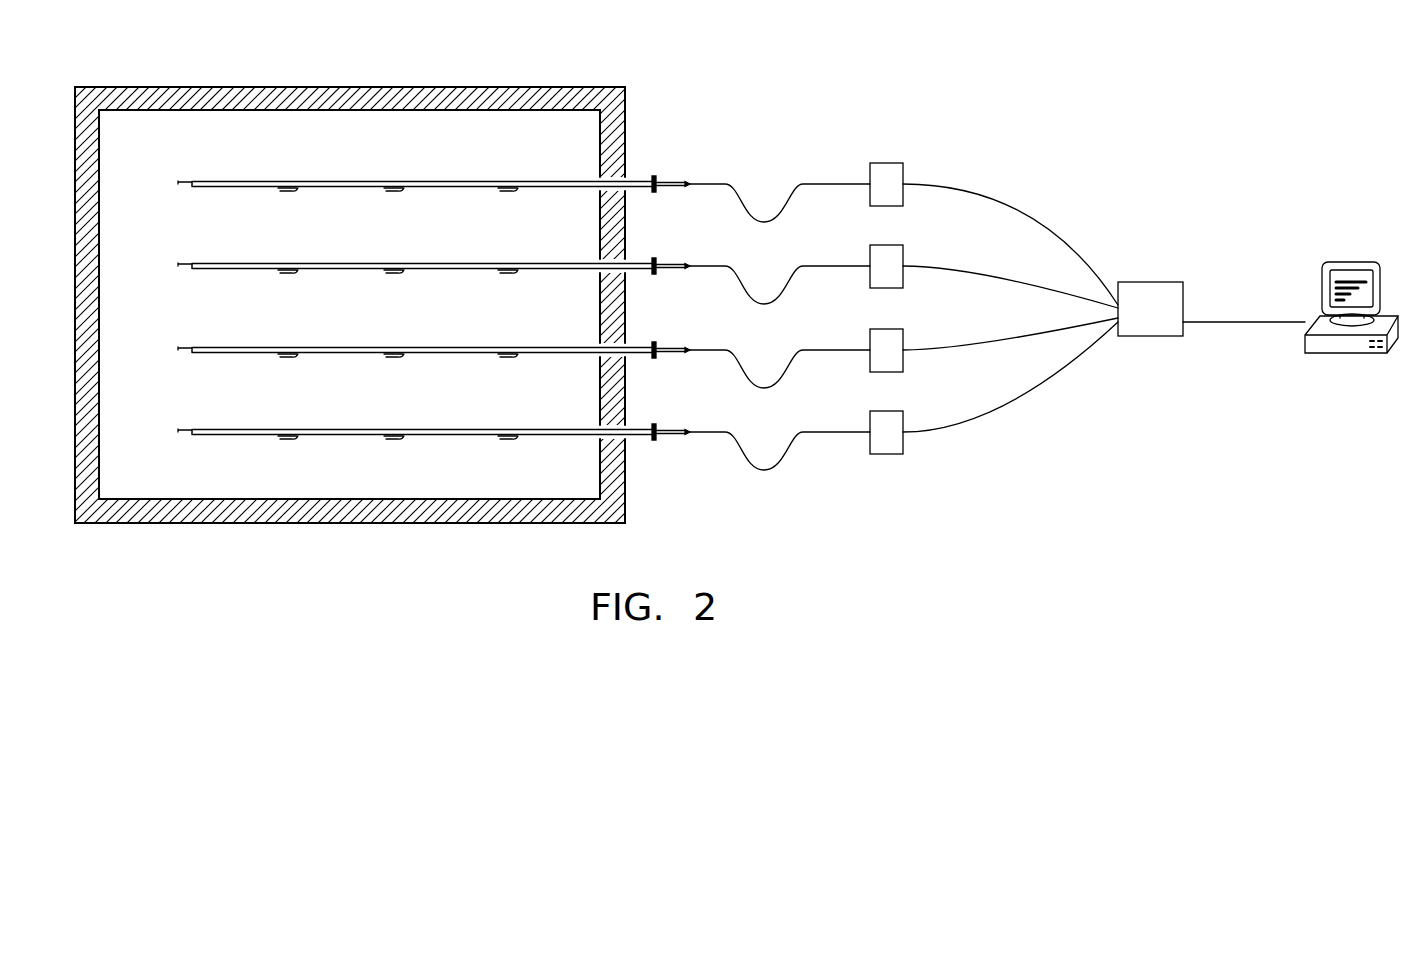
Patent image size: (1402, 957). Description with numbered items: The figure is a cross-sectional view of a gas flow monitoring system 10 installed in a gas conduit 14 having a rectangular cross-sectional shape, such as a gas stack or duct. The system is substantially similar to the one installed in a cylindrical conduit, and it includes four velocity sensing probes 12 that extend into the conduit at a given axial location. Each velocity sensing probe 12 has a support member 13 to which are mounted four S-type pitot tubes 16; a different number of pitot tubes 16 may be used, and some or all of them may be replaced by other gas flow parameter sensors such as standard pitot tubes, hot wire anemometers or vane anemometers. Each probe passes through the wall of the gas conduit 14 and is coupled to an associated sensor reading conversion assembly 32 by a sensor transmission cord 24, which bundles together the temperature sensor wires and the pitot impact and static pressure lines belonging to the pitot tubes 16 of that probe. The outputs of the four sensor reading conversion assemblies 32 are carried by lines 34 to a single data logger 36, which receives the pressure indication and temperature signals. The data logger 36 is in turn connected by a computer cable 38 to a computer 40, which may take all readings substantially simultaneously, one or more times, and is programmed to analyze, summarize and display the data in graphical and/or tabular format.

The gas flow monitoring system 10 is at (973, 113).
The velocity sensing probe 12 is at (670, 182).
The support member 13 is at (444, 182).
The gas conduit 14 is at (548, 87).
The S-type pitot tube 16 is at (182, 183).
The sensor transmission cord 24 is at (739, 195).
The sensor reading conversion assembly 32 is at (893, 182).
The signal line 34 is at (1044, 225).
The data logger 36 is at (1157, 338).
The computer cable 38 is at (1252, 320).
The computer 40 is at (1352, 262).